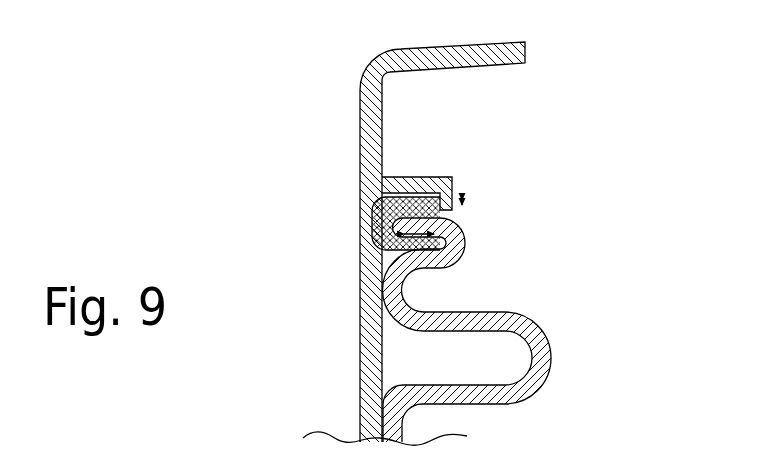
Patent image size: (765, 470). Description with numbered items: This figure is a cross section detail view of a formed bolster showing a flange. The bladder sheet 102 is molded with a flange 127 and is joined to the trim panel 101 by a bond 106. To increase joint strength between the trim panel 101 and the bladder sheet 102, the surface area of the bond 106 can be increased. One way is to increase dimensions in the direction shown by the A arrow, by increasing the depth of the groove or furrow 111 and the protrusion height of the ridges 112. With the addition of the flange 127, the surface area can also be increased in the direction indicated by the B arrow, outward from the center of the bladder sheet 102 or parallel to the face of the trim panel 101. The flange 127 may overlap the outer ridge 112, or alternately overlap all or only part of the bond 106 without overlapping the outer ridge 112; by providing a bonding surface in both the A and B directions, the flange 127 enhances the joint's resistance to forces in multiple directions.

The trim panel 101 is at (366, 353).
The bladder sheet 102 is at (550, 352).
The bond 106 is at (373, 237).
The groove or furrow 111 is at (376, 201).
The ridges 112 is at (441, 177).
The flange 127 is at (451, 193).
The A arrow A is at (441, 252).
The B arrow B is at (468, 202).